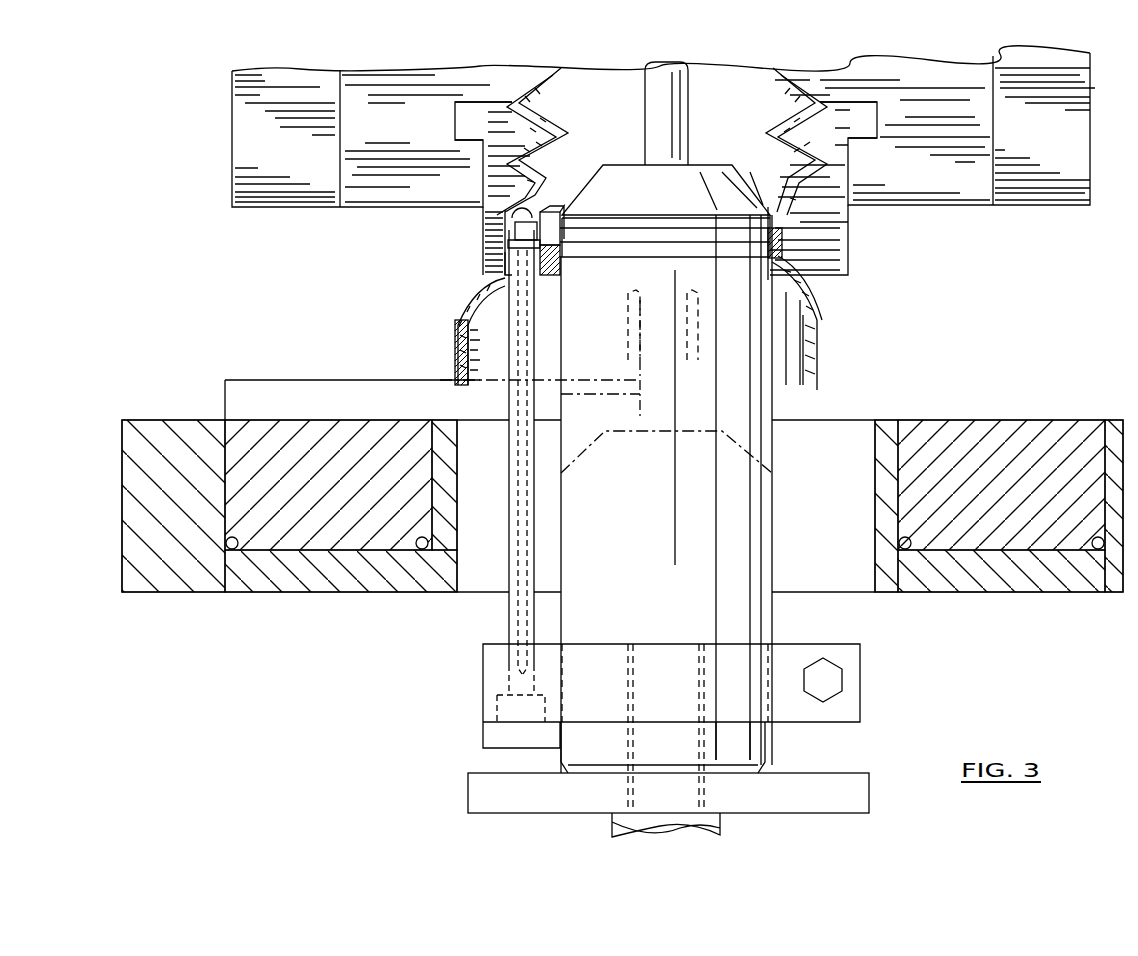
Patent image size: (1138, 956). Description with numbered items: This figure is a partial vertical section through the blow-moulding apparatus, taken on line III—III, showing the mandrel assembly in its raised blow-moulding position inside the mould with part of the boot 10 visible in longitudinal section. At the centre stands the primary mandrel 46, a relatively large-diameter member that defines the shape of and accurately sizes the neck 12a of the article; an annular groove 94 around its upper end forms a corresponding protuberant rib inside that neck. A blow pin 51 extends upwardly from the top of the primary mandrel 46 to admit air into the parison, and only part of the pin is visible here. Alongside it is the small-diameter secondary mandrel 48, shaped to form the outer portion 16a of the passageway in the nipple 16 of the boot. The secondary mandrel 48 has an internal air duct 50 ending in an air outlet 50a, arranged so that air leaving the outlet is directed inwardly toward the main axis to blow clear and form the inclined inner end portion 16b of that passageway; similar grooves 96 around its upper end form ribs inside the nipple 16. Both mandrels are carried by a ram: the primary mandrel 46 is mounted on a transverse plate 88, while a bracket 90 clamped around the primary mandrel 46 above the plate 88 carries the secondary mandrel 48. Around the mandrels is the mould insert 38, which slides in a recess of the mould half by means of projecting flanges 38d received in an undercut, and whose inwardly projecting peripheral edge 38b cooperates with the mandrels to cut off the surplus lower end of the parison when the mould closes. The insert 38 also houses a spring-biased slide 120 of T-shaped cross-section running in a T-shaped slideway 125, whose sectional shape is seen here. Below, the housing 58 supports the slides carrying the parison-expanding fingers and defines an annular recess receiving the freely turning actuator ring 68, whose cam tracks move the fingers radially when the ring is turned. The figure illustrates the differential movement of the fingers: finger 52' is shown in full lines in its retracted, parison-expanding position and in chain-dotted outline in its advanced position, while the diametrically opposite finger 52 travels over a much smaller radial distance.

The boot 10 is at (765, 93).
The neck 12a is at (784, 242).
The nipple 16 is at (512, 228).
The outer portion 16a is at (495, 278).
The inner end portion 16b is at (508, 212).
The mould insert 38 is at (880, 115).
The peripheral edge 38b is at (556, 278).
The projecting flanges 38d is at (455, 105).
The primary mandrel 46 is at (608, 436).
The secondary mandrel 48 is at (528, 453).
The internal air duct 50 is at (522, 542).
The air outlet 50a is at (580, 200).
The blow pin 51 is at (650, 118).
The finger 52 is at (724, 354).
The finger 52' is at (434, 352).
The housing 58 is at (1082, 596).
The actuator ring 68 is at (1003, 432).
The transverse plate 88 is at (818, 790).
The bracket 90 is at (800, 652).
The annular groove 94 is at (702, 244).
The grooves 96 is at (548, 245).
The slide 120 is at (506, 244).
The T-shaped slideway 125 is at (500, 262).